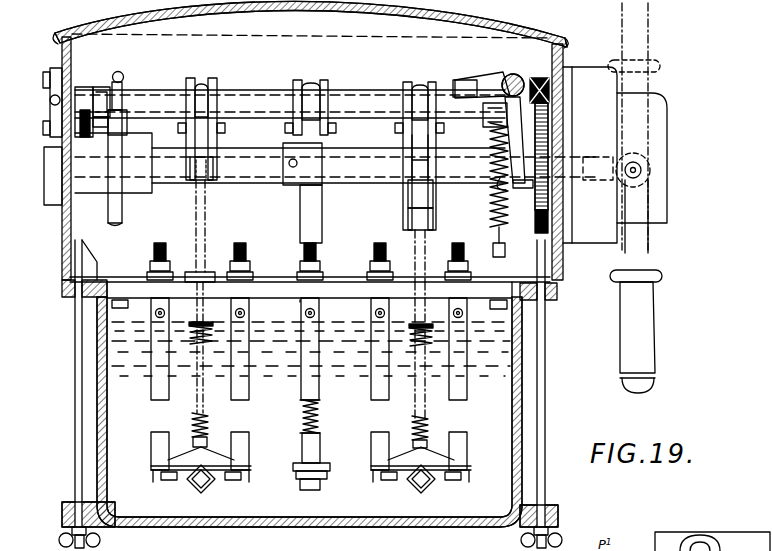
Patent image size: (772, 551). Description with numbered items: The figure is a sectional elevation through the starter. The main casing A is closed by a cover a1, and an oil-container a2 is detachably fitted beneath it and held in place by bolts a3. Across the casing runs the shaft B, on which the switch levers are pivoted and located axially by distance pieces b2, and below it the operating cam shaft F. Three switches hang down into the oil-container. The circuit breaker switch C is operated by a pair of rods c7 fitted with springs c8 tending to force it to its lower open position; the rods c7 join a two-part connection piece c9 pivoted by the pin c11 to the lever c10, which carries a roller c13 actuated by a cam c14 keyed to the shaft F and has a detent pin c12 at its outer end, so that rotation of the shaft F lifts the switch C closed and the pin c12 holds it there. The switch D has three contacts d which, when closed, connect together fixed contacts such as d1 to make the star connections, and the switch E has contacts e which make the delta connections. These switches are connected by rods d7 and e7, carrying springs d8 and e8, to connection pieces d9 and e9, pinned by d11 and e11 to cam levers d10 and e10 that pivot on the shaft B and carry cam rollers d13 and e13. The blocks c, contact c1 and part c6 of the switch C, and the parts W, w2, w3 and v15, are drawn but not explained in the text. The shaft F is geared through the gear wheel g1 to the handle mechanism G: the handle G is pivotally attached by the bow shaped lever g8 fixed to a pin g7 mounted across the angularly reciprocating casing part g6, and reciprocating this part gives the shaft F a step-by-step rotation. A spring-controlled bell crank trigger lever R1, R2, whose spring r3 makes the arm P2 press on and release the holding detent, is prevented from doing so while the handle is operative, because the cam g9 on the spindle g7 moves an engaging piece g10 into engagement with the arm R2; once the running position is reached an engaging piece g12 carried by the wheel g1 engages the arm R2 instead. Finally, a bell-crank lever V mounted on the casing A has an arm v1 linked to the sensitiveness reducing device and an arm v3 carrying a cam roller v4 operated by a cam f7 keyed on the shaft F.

The cover a1 is at (332, 6).
The main casing A is at (62, 222).
The bolts a3 is at (78, 348).
The oil-container a2 is at (100, 421).
The shaft B is at (258, 84).
The distance pieces b2 is at (365, 95).
The operating shaft F is at (458, 178).
The bell-crank lever V is at (62, 101).
The arm of bell-crank lever v3 is at (97, 90).
The cam roller v4 is at (118, 72).
The arm of bell-crank lever v1 is at (80, 124).
The valve link v15 is at (112, 120).
The cam f7 is at (122, 206).
The cam lever e10 is at (205, 86).
The cam roller e13 is at (209, 106).
The pin e11 is at (178, 128).
The connection piece e9 is at (213, 168).
The cam roller d13 is at (309, 90).
The cam lever d10 is at (324, 86).
The pin d11 is at (286, 128).
The connection piece d9 is at (296, 192).
The roller c13 is at (421, 88).
The pin c11 is at (396, 128).
The cam c14 is at (431, 146).
The lever c10 is at (406, 168).
The detent pin c12 is at (407, 197).
The two-part connection piece c9 is at (408, 222).
The arm of lever P2 is at (470, 80).
The arm of bell crank trigger lever R1 is at (500, 76).
The spring r3 is at (516, 73).
The bracket W is at (487, 114).
The ratchet head w2 is at (545, 88).
The arm of bell crank trigger lever R2 is at (522, 138).
The spring w3 is at (490, 200).
The engaging piece g12 is at (522, 195).
The gear wheel g1 is at (549, 213).
The reciprocating casing part g6 is at (655, 123).
The engaging piece g10 is at (598, 164).
The cam g9 is at (640, 160).
The pin g7 is at (642, 172).
The bow shaped lever g8 is at (636, 207).
The handle G is at (646, 40).
The rod e7 is at (206, 352).
The spring e8 is at (208, 426).
The contacts e is at (158, 452).
The three pair contact switch E is at (178, 470).
The contact d1 is at (298, 360).
The rod d7 is at (304, 416).
The spring seat d8 is at (318, 415).
The contacts d is at (322, 449).
The switch D is at (302, 476).
The springs c8 is at (414, 334).
The rods c7 is at (421, 378).
The hanger c1 is at (468, 383).
The bar c6 is at (378, 360).
The block c is at (381, 440).
The switch C is at (441, 470).